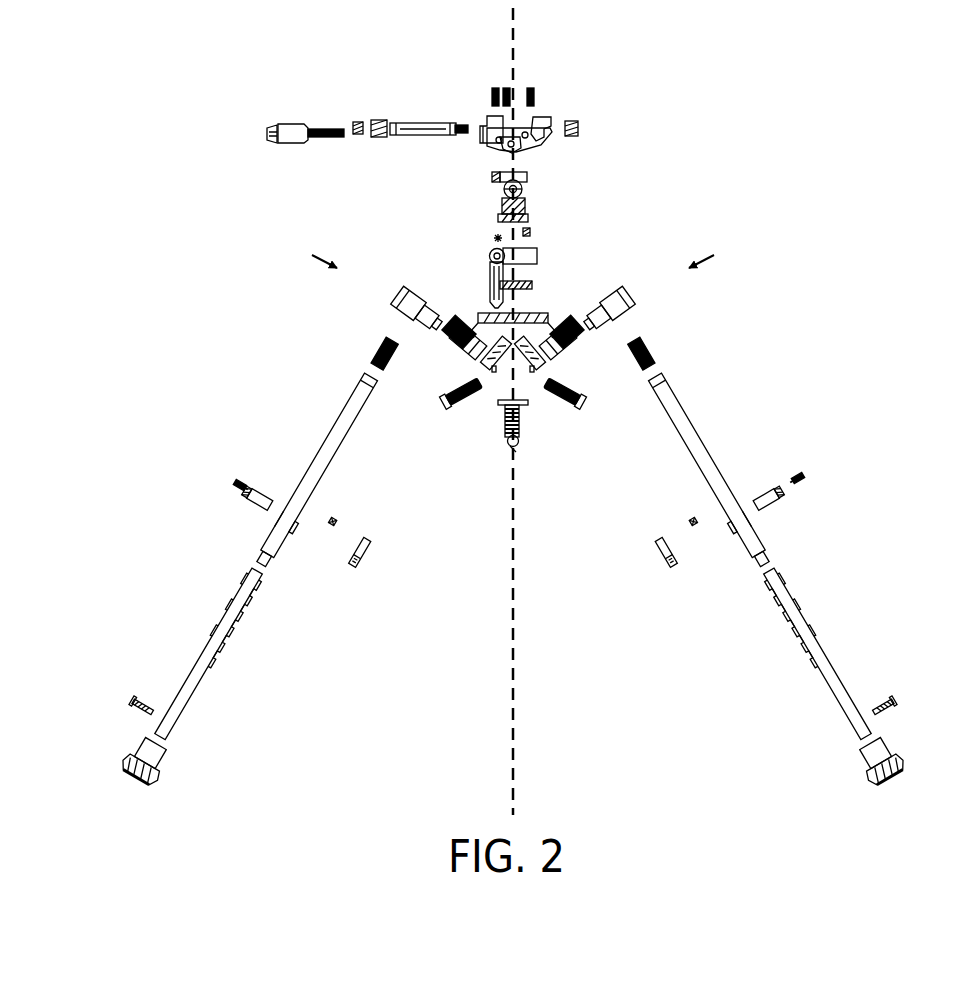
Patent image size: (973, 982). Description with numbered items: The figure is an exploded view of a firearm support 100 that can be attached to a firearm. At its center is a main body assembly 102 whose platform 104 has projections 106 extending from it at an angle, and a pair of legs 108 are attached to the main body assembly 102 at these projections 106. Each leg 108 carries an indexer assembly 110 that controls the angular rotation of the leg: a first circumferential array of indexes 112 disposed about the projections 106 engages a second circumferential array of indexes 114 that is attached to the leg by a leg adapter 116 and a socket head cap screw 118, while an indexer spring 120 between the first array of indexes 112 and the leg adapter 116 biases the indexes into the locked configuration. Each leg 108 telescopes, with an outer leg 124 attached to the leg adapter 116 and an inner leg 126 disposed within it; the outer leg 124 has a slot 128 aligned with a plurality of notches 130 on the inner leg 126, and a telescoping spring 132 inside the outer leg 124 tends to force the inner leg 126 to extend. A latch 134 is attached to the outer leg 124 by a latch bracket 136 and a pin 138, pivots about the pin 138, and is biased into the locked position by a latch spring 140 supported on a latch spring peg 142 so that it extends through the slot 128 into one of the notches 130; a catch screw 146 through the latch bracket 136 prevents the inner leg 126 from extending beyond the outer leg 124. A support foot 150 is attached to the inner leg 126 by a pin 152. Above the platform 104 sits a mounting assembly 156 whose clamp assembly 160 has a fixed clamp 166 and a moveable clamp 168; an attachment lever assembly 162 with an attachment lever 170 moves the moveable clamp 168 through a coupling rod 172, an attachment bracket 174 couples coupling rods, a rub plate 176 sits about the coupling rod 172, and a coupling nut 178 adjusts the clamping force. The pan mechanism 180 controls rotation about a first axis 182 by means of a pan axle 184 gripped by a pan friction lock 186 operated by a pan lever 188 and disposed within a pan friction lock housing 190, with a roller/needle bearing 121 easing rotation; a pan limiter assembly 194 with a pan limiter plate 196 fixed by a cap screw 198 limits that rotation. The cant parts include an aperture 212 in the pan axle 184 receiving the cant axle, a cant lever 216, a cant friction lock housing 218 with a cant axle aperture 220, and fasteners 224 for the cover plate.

The firearm support 100 is at (710, 57).
The main body assembly 102 is at (541, 305).
The platform 104 is at (488, 302).
The projections 106 is at (458, 350).
The legs 108 is at (280, 418).
The indexer assembly 110 is at (507, 259).
The first circumferential array of indexes 112 is at (472, 362).
The second circumferential array of indexes 114 is at (493, 371).
The leg adapter 116 is at (407, 293).
The socket head cap screw 118 is at (436, 407).
The indexer spring 120 is at (457, 320).
The roller/needle bearing 121 is at (521, 286).
The outer leg 124 is at (352, 394).
The inner leg 126 is at (218, 631).
The slot 128 is at (294, 536).
The notches 130 is at (237, 647).
The telescoping spring 132 is at (380, 346).
The latch 134 is at (371, 548).
The latch bracket 136 is at (260, 503).
The pin 138 is at (315, 530).
The latch spring 140 is at (346, 531).
The latch spring peg 142 is at (332, 521).
The catch screw 146 is at (233, 487).
The support foot 150 is at (132, 772).
The pin 152 is at (138, 710).
The mounting assembly 156 is at (685, 153).
The clamp assembly 160 is at (553, 55).
The attachment lever assembly 162 is at (240, 68).
The fixed clamp 166 is at (488, 115).
The moveable clamp 168 is at (550, 116).
The attachment lever 170 is at (379, 119).
The coupling rod 172 is at (432, 122).
The attachment bracket 174 is at (358, 121).
The rub plate 176 is at (480, 125).
The coupling nut 178 is at (580, 132).
The pan mechanism 180 is at (453, 193).
The first axis 182 is at (512, 703).
The pan axle 184 is at (530, 207).
The pan friction lock 186 is at (528, 168).
The pan lever 188 is at (488, 260).
The pan friction lock housing 190 is at (536, 250).
The pan limiter assembly 194 is at (527, 451).
The pan limiter plate 196 is at (498, 408).
The cap screw 198 is at (512, 448).
The aperture 212 is at (508, 197).
The cant lever 216 is at (291, 124).
The cant friction lock housing 218 is at (490, 140).
The cant axle aperture 220 is at (502, 148).
The fasteners 224 is at (531, 230).